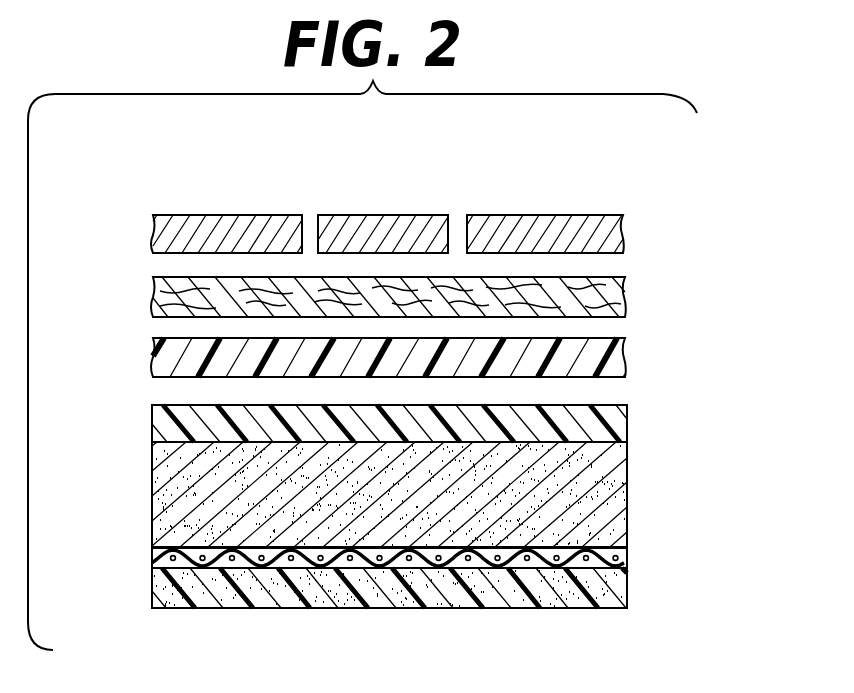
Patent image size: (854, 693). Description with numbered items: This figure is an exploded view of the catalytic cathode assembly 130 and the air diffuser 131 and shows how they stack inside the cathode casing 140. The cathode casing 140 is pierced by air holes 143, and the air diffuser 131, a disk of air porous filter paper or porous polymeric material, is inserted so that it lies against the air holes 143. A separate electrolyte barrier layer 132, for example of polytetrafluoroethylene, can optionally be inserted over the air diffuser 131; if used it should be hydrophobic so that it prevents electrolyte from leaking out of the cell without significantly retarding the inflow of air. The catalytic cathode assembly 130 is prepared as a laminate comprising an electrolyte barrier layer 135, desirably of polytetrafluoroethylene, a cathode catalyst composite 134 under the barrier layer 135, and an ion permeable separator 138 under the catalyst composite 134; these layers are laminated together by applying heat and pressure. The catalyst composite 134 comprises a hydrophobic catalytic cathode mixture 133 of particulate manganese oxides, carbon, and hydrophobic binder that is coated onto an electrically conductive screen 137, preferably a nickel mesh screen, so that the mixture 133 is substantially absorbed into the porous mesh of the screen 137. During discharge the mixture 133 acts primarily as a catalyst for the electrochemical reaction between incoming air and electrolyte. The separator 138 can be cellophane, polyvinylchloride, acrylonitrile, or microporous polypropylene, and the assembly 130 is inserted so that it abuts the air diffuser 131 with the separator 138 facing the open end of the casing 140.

The catalytic cathode assembly 130 is at (130, 405).
The air diffuser 131 is at (615, 300).
The electrolyte barrier layer 132 is at (615, 360).
The catalytic cathode mixture 133 is at (610, 472).
The cathode catalyst composite 134 is at (636, 511).
The electrolyte barrier layer 135 is at (620, 428).
The electrically conductive screen 137 is at (603, 578).
The ion permeable separator 138 is at (575, 600).
The cathode casing 140 is at (612, 231).
The air holes 143 is at (311, 222).